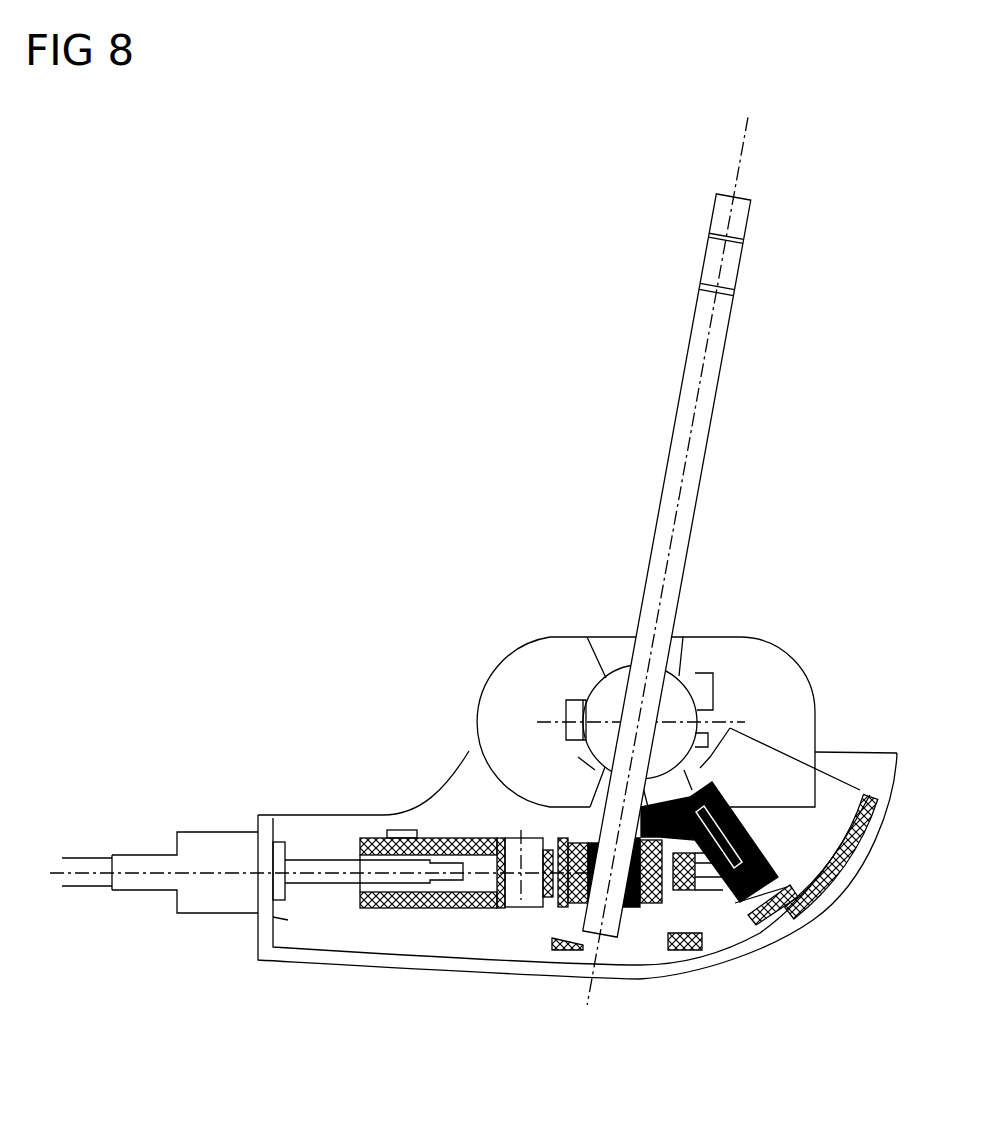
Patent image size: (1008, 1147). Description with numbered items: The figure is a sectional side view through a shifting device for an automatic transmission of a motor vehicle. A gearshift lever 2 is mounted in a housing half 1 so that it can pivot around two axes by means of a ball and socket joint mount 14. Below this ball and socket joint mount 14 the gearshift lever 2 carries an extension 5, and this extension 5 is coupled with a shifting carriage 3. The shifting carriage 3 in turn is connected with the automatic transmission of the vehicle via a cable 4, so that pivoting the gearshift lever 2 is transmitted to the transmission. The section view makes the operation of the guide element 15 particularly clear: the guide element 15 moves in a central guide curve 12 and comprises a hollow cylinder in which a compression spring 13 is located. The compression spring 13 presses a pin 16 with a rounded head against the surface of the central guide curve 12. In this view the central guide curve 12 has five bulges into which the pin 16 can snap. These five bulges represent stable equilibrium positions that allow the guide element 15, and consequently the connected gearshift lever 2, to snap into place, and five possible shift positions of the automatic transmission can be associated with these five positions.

The housing half 1 is at (497, 720).
The gearshift lever 2 is at (699, 487).
The shifting carriage 3 is at (368, 905).
The cable 4 is at (470, 907).
The extension 5 is at (607, 933).
The central guide curve 12 is at (832, 890).
The compression spring 13 is at (713, 867).
The ball and socket joint mount 14 is at (603, 700).
The guide element 15 is at (692, 792).
The pin 16 is at (788, 922).